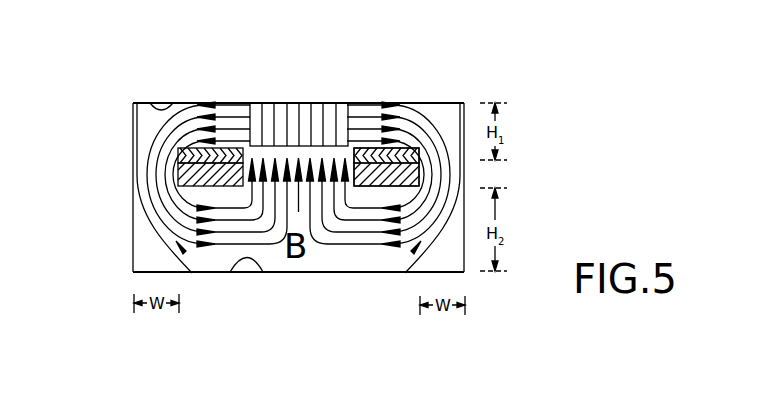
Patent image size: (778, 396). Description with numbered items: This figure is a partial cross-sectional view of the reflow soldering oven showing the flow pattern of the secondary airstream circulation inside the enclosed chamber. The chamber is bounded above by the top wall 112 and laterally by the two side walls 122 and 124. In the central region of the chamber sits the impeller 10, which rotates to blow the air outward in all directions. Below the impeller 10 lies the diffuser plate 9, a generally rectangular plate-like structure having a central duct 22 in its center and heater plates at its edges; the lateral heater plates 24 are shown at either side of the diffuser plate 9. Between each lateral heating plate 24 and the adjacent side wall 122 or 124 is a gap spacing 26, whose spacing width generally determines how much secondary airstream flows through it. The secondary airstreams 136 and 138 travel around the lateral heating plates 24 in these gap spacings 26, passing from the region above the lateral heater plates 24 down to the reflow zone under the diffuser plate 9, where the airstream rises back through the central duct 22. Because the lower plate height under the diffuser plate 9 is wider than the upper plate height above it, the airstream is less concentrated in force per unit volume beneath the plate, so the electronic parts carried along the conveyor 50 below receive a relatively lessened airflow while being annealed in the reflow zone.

The impeller 10 is at (303, 102).
The lateral heater plates 24 is at (230, 147).
The diffuser plate 9 is at (223, 187).
The central duct 22 is at (340, 187).
The gap spacings 26 is at (156, 167).
The top wall 112 is at (150, 103).
The conveyor 50 is at (263, 273).
The side wall 122 is at (137, 103).
The side wall 124 is at (460, 103).
The secondary airstream 136 is at (192, 273).
The secondary airstream 138 is at (405, 273).